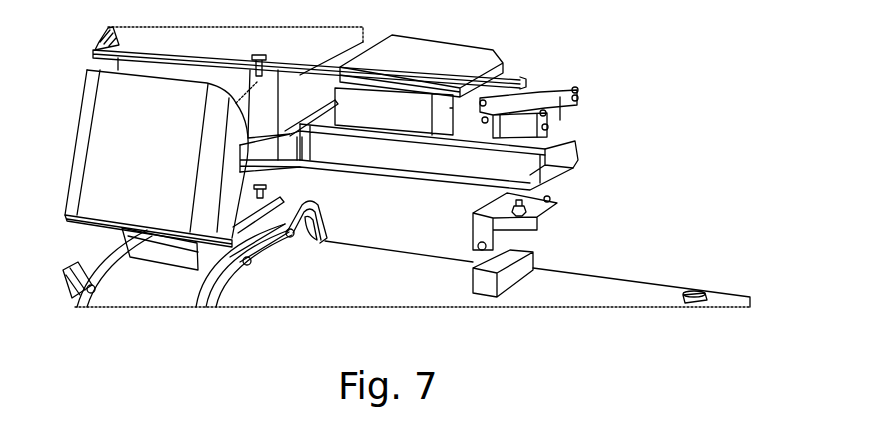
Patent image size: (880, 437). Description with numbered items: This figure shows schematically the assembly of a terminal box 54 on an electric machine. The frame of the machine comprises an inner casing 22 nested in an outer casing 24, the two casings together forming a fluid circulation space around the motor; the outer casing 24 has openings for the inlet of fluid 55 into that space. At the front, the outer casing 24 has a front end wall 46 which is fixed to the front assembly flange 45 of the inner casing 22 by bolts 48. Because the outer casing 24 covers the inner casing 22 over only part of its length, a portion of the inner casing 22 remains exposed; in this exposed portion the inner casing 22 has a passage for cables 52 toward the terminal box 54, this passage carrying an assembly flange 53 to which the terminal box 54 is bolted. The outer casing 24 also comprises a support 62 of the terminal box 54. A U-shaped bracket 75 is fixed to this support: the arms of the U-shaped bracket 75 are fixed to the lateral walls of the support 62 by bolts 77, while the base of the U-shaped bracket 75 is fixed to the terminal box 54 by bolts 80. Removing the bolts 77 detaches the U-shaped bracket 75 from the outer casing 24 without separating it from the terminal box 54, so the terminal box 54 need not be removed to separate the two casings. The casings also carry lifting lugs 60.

The inner casing 22 is at (135, 292).
The outer casing 24 is at (645, 283).
The front assembly flange 45 is at (210, 290).
The front end wall 46 is at (268, 245).
The bolts 48 is at (248, 282).
The passage for cables 52 is at (120, 240).
The assembly flange 53 is at (266, 202).
The terminal box 54 is at (572, 60).
The openings for the inlet of fluid 55 is at (697, 292).
The lifting lugs 60 is at (318, 212).
The support 62 is at (532, 266).
The U-shaped bracket 75 is at (560, 205).
The bolts 77 is at (470, 238).
The bolts 80 is at (552, 200).